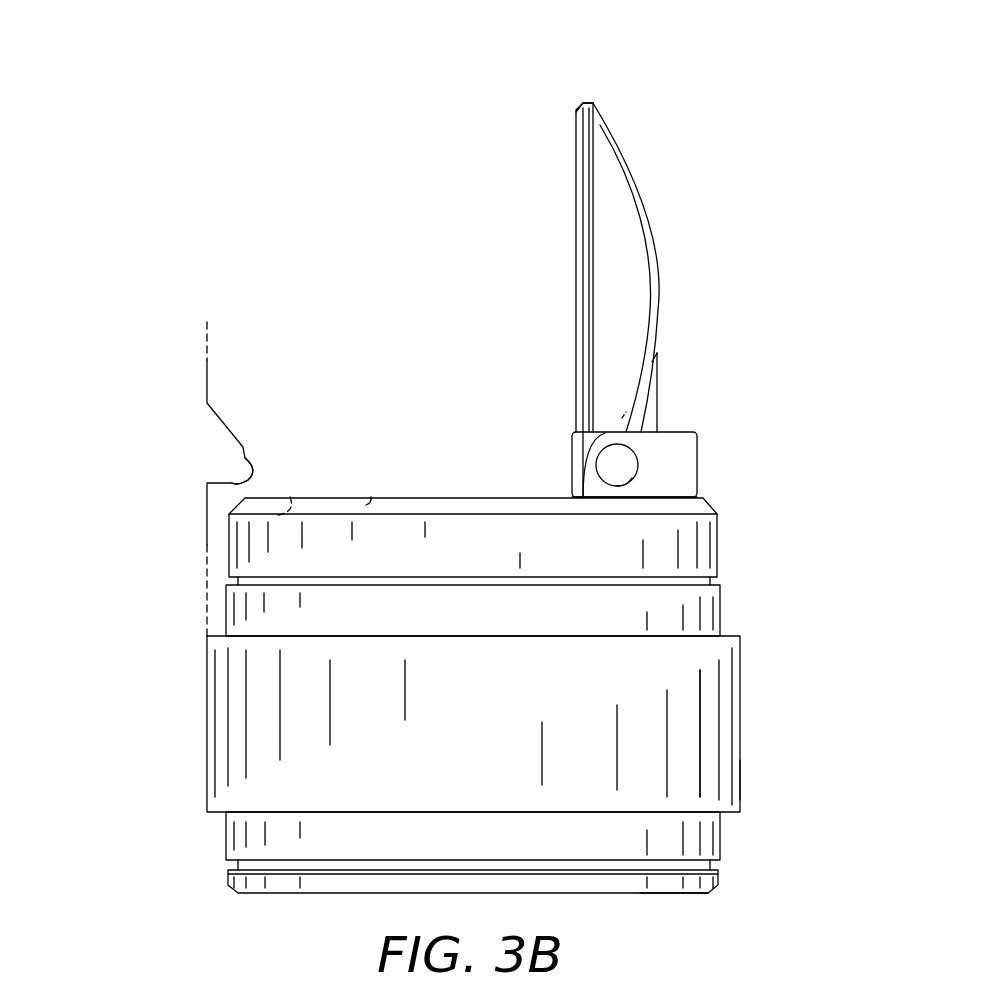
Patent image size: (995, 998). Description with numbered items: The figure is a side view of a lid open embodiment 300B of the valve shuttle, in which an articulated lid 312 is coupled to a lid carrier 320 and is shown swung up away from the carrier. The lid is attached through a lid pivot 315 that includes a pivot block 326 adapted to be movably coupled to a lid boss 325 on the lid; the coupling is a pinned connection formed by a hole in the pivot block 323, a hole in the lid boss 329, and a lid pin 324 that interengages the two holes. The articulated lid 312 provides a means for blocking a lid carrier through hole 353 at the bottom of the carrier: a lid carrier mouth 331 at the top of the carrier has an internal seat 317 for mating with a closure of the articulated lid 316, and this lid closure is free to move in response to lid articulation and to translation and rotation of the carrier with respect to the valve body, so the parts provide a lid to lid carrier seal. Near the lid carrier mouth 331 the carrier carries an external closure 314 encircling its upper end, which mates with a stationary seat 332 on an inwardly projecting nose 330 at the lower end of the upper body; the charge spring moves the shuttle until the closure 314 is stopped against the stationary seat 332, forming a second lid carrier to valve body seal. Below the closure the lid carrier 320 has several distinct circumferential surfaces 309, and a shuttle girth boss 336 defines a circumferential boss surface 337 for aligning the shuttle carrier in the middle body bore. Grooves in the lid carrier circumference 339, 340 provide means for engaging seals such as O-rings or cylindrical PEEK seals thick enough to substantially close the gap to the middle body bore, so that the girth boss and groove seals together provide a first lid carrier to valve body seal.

The lid open embodiment 300B is at (331, 206).
The articulated lid 312 is at (639, 150).
The closure of the articulated lid 316 is at (578, 107).
The lid boss 325 is at (655, 378).
The hole in the lid boss 329 is at (645, 430).
The pivot block 326 is at (672, 443).
The lid pin 324 is at (612, 468).
The hole in the pivot block 323 is at (632, 478).
The lid pivot 315 is at (567, 436).
The inwardly projecting nose 330 is at (241, 423).
The stationary seat 332 is at (244, 458).
The internal seat 317 is at (290, 497).
The lid carrier mouth 331 is at (371, 497).
The external closure 314 is at (242, 500).
The groove in the lid carrier circumference 339 is at (717, 584).
The distinct circumferential surfaces 309 is at (221, 612).
The lid carrier 320 is at (204, 700).
The shuttle girth boss 336 is at (682, 718).
The circumferential boss surface 337 is at (740, 778).
The groove in the lid carrier circumference 340 is at (717, 867).
The lid carrier through hole 353 is at (676, 894).